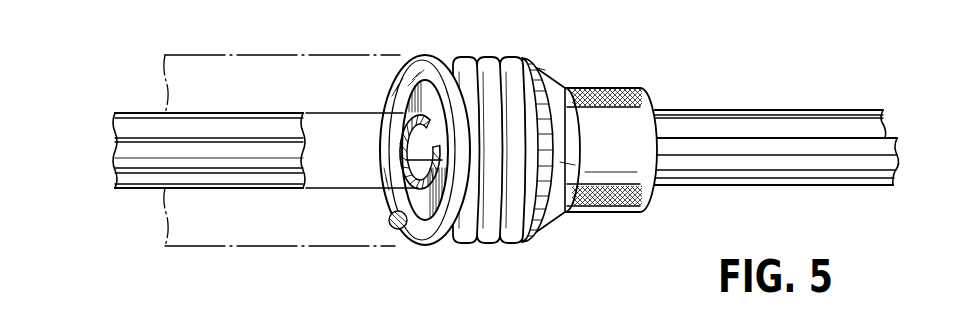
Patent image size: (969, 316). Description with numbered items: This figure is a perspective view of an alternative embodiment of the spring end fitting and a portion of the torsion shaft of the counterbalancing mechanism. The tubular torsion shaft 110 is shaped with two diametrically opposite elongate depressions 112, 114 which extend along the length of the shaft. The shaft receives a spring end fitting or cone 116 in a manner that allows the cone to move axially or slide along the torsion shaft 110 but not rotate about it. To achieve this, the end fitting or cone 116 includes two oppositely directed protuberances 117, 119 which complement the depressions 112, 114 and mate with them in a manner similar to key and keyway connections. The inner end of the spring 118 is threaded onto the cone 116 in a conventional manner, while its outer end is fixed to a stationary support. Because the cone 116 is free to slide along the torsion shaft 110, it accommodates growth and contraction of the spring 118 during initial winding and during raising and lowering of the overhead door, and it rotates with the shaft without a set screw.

The torsion shaft 110 is at (133, 188).
The elongate depression 112 is at (403, 141).
The elongate depression 114 is at (410, 167).
The spring end fitting or cone 116 is at (545, 80).
The protuberance 117 is at (433, 120).
The spring 118 is at (437, 246).
The protuberance 119 is at (414, 180).